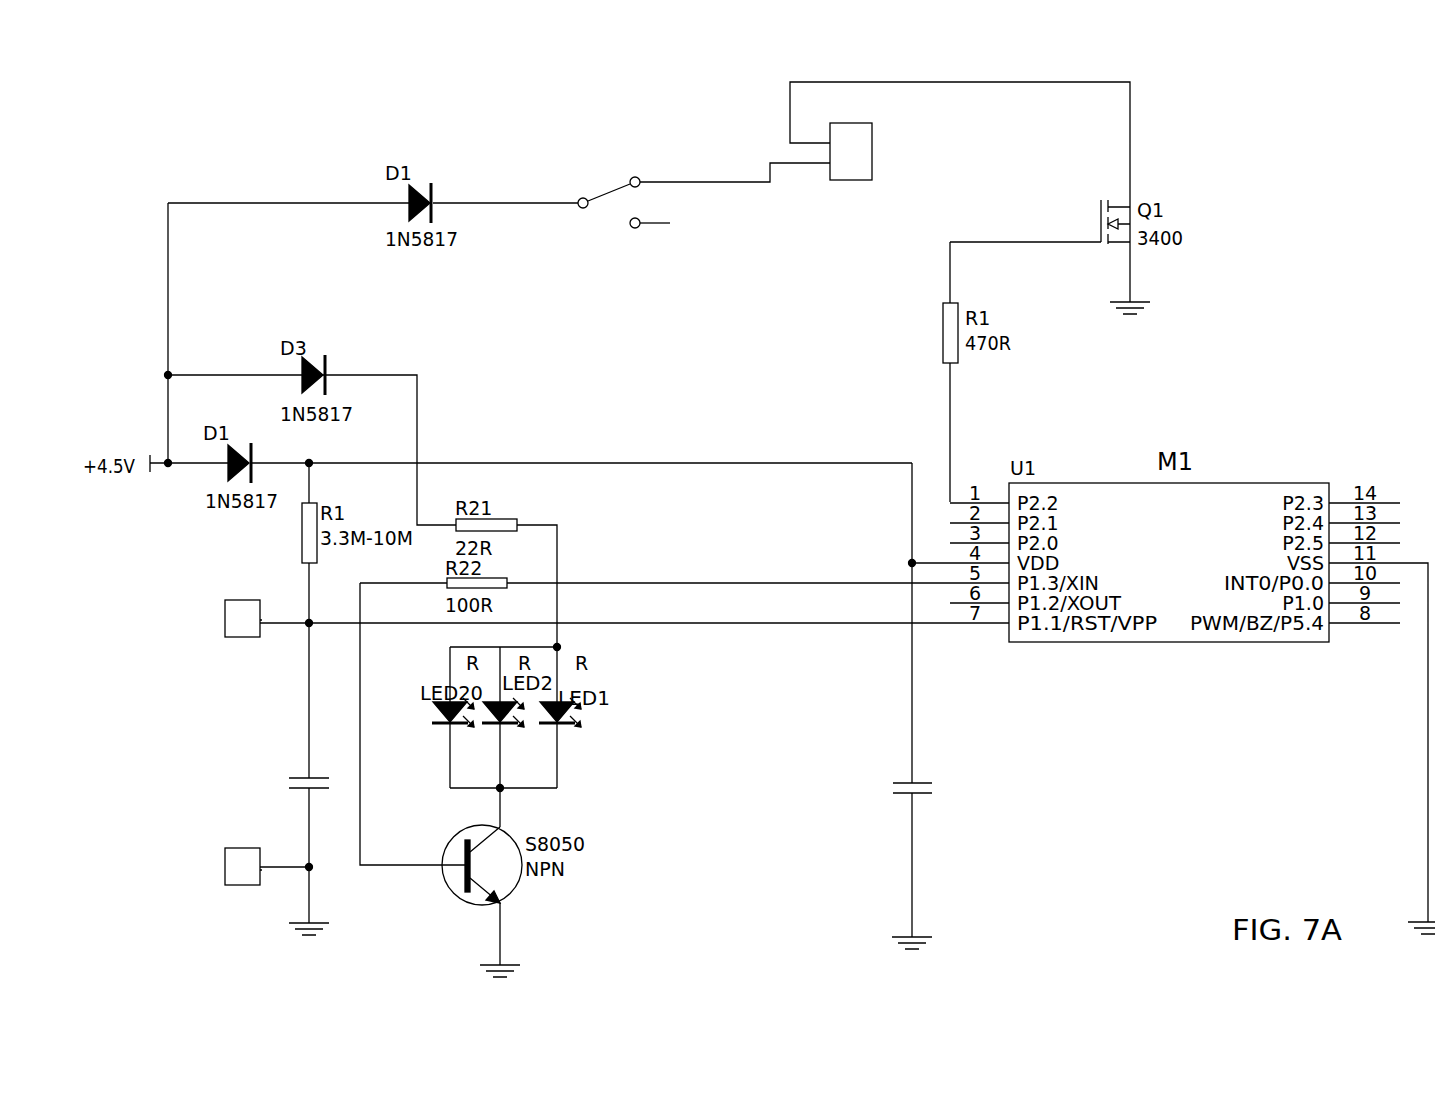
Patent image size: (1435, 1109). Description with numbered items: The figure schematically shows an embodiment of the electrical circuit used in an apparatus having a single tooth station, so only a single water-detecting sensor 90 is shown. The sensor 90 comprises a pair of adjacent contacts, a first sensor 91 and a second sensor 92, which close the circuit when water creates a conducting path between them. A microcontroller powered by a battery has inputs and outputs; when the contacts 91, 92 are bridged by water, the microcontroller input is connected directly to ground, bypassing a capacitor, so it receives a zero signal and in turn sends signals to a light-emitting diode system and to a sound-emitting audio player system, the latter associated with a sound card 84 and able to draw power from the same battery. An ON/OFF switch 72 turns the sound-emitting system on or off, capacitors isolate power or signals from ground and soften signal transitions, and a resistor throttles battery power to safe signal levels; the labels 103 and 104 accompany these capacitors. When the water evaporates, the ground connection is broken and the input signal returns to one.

The ON/OFF switch 72 is at (590, 149).
The sound card 84 is at (855, 220).
The sensor 90 is at (220, 625).
The first sensor 91 is at (230, 612).
The second sensor 92 is at (237, 877).
The capacitor C1 103 is at (266, 787).
The capacitor C2 104 is at (933, 804).